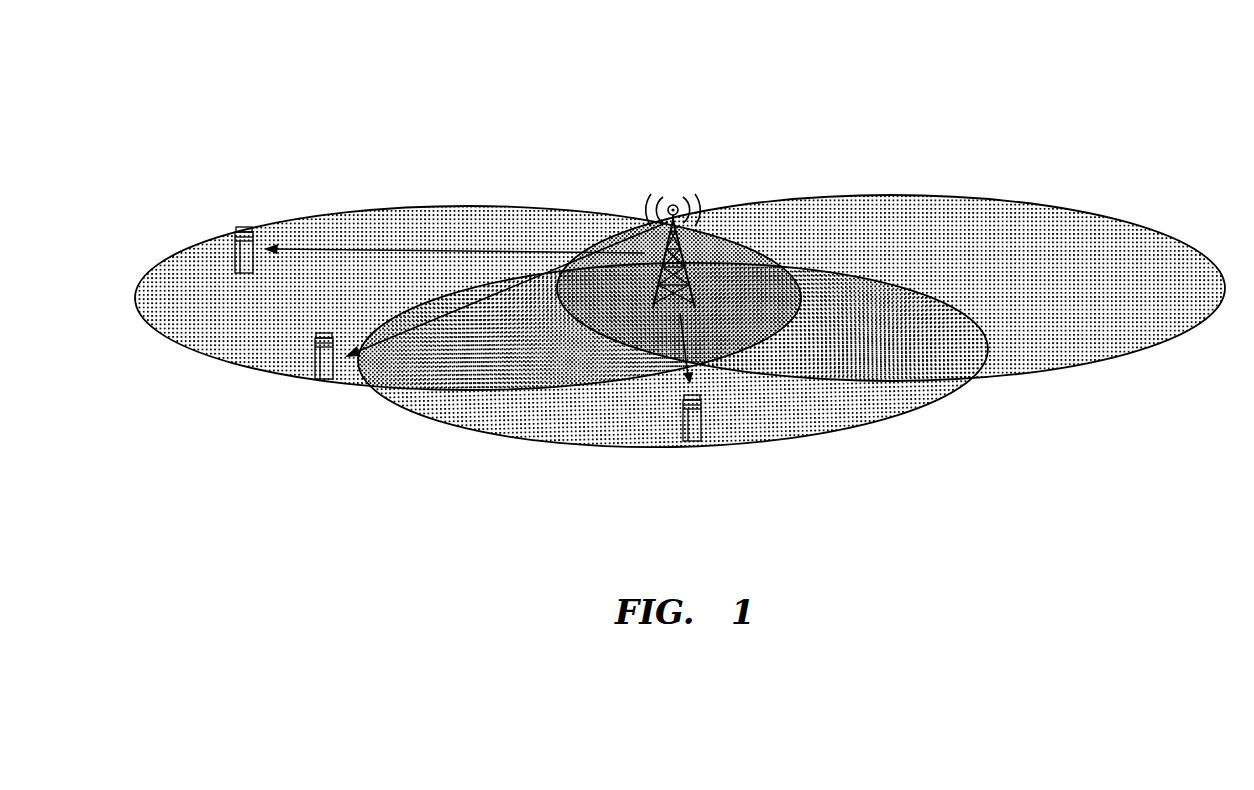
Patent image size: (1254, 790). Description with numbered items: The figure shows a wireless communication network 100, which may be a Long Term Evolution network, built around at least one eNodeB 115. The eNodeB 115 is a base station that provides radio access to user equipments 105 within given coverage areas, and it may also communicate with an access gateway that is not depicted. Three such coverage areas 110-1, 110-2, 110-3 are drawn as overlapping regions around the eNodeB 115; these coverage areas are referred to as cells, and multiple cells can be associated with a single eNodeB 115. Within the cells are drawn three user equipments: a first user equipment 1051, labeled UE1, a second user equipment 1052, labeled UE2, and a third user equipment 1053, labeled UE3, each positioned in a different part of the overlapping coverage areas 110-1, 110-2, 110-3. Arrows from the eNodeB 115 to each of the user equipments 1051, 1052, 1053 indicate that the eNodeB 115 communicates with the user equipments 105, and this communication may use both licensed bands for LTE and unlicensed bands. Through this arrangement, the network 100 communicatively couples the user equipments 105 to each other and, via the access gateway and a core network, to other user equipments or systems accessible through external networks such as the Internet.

The wireless communication network 100 is at (1008, 60).
The user equipments 105 is at (433, 342).
The user equipment 1051 is at (233, 229).
The user equipment 1052 is at (313, 378).
The user equipment 1053 is at (682, 440).
The coverage area 110-1 is at (470, 207).
The coverage area 110-2 is at (820, 436).
The coverage area 110-3 is at (893, 195).
The eNodeB 115 is at (722, 160).